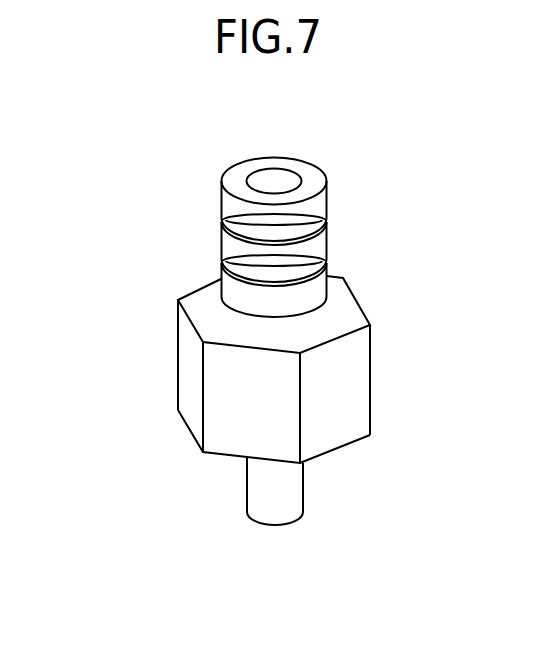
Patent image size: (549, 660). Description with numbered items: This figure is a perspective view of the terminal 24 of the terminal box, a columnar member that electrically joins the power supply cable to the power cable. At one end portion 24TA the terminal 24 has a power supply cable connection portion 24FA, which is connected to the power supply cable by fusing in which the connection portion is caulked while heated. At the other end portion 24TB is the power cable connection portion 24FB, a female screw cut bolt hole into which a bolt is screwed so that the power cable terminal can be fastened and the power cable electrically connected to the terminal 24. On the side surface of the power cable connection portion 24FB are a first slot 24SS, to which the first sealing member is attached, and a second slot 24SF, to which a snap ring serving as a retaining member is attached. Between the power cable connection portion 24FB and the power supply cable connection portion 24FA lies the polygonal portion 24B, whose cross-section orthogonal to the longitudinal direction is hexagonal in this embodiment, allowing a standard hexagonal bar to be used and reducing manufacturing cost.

The terminal 24 is at (122, 138).
The other end portion 24TB is at (235, 155).
The power cable connection portion 24FB is at (276, 181).
The second slot 24SF is at (325, 222).
The first slot 24SS is at (325, 263).
The polygonal portion 24B is at (188, 366).
The power supply cable connection portion 24FA is at (293, 492).
The end portion 24TA is at (256, 540).